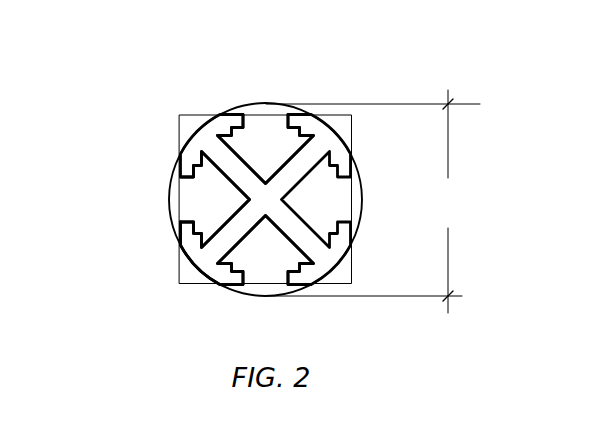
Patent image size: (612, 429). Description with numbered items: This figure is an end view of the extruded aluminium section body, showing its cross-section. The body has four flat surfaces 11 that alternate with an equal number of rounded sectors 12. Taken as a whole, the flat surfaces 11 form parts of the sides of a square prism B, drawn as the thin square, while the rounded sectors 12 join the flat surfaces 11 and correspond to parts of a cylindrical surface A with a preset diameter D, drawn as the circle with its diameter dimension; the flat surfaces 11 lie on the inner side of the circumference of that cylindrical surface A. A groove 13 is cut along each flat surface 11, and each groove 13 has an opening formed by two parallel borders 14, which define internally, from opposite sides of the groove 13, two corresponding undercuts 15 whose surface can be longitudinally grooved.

The flat surfaces 11 is at (172, 226).
The rounded sectors 12 is at (180, 267).
The groove 13 is at (190, 197).
The parallel borders 14 is at (292, 278).
The undercuts 15 is at (258, 136).
The cylindrical surface A is at (364, 194).
The square prism B is at (352, 262).
The diameter D is at (373, 201).